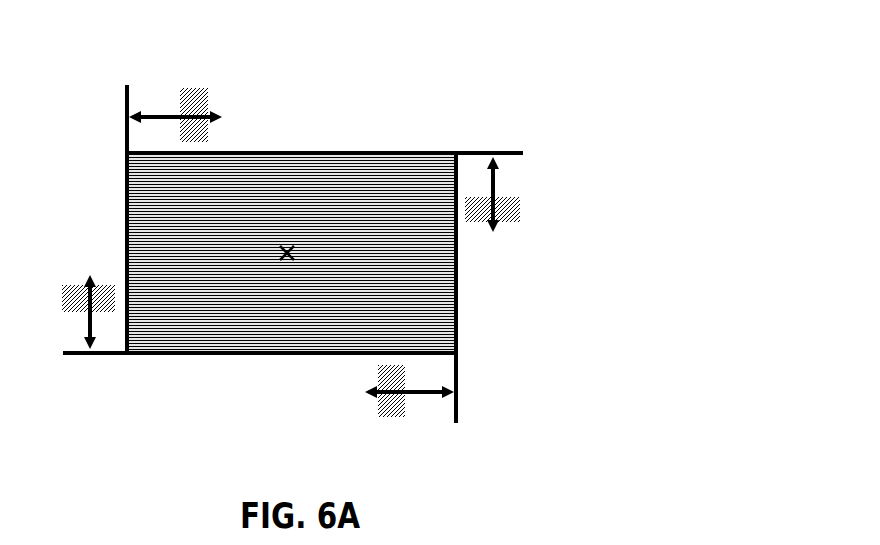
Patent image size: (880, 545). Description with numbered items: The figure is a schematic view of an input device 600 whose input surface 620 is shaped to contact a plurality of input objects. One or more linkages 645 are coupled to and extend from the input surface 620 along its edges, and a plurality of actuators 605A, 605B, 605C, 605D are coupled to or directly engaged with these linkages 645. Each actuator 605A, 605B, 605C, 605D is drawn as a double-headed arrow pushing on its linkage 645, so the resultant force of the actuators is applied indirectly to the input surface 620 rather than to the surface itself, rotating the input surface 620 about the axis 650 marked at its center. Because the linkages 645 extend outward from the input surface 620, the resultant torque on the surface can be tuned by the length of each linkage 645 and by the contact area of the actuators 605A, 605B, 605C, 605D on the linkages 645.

The input device 600 is at (443, 58).
The input surface 620 is at (377, 185).
The linkages 645 is at (125, 100).
The actuator 605A is at (378, 398).
The actuator 605B is at (503, 220).
The actuator 605C is at (182, 102).
The actuator 605D is at (77, 285).
The axis 650 is at (283, 258).